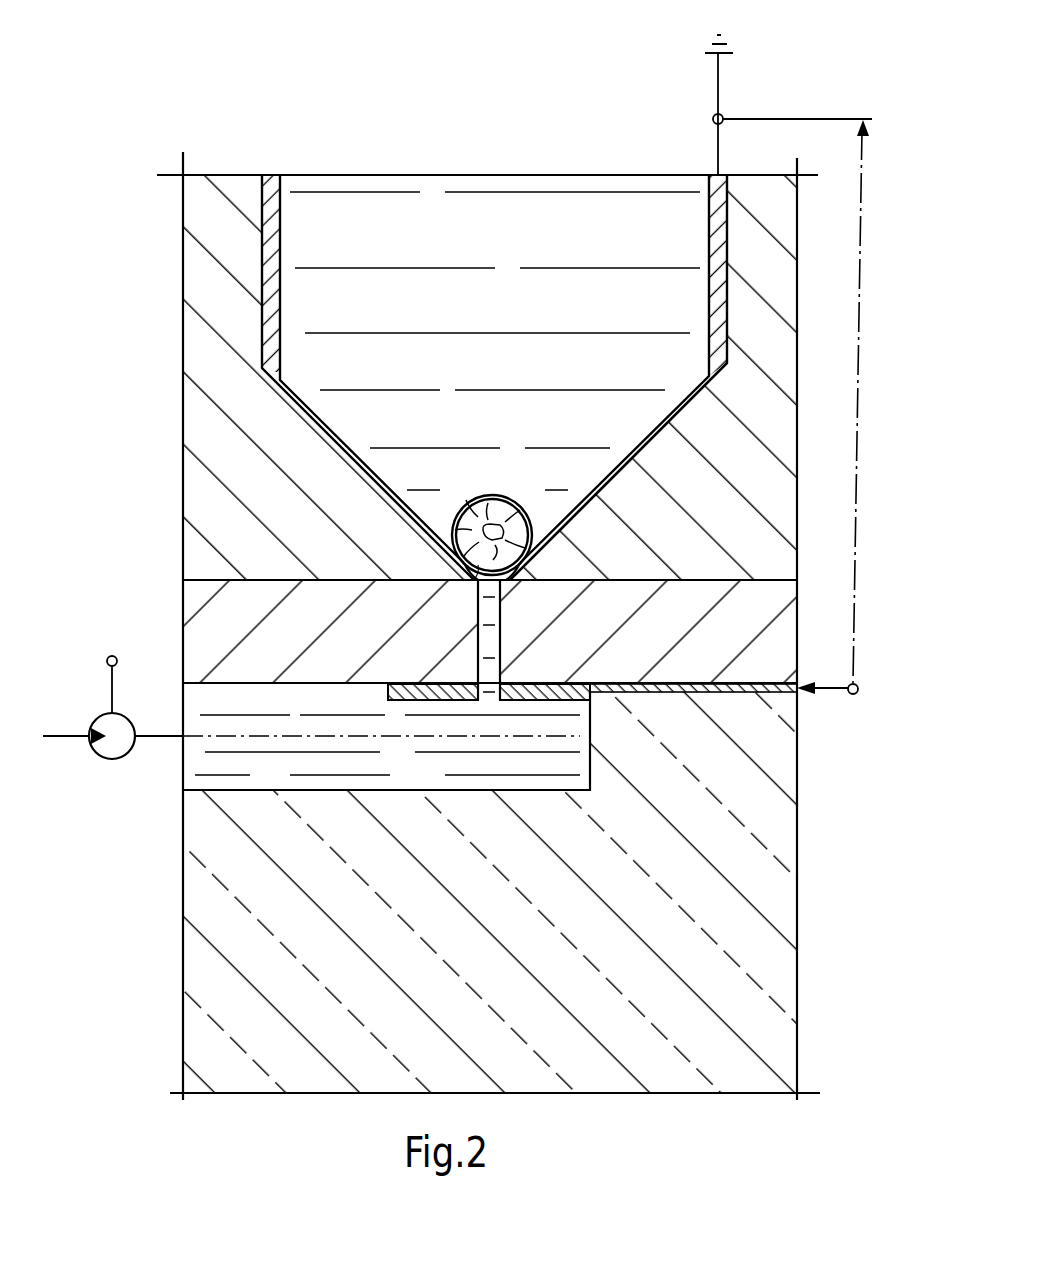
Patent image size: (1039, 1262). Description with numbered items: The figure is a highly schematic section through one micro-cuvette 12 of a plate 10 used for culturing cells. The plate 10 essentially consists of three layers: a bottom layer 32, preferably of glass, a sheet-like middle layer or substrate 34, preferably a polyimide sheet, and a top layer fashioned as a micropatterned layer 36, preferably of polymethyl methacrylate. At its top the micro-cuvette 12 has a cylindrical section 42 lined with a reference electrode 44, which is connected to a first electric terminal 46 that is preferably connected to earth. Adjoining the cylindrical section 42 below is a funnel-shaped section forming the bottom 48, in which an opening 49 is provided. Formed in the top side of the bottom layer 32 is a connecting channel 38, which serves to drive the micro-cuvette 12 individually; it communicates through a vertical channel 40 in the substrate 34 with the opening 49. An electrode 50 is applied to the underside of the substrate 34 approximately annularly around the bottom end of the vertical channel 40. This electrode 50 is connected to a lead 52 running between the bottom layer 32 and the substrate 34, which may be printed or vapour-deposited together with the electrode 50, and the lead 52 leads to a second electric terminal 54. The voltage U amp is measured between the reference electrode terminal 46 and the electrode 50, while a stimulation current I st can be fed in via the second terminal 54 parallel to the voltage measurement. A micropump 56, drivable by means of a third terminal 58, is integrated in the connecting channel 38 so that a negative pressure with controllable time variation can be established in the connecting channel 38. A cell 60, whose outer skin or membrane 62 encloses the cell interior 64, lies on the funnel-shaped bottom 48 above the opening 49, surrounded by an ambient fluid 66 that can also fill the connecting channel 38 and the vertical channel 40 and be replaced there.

The plate 10 is at (156, 141).
The micro-cuvette 12 is at (593, 160).
The bottom layer 32 is at (790, 855).
The substrate 34 is at (215, 615).
The micropatterned layer 36 is at (200, 485).
The connecting channel 38 is at (215, 760).
The vertical channel 40 is at (505, 630).
The cylindrical section 42 is at (280, 245).
The reference electrode 44 is at (278, 307).
The first electric terminal 46 is at (713, 120).
The bottom 48 is at (644, 428).
The opening 49 is at (510, 588).
The electrode 50 is at (533, 696).
The lead 52 is at (690, 684).
The second electric terminal 54 is at (858, 686).
The micropump 56 is at (112, 760).
The third terminal 58 is at (112, 655).
The cell 60 is at (494, 478).
The outer skin or membrane 62 is at (524, 500).
The cell interior 64 is at (470, 498).
The ambient fluid 66 is at (506, 313).